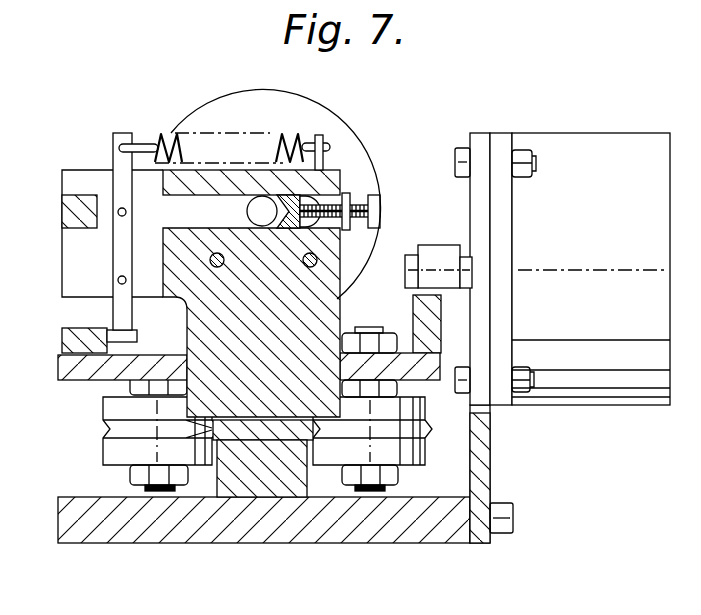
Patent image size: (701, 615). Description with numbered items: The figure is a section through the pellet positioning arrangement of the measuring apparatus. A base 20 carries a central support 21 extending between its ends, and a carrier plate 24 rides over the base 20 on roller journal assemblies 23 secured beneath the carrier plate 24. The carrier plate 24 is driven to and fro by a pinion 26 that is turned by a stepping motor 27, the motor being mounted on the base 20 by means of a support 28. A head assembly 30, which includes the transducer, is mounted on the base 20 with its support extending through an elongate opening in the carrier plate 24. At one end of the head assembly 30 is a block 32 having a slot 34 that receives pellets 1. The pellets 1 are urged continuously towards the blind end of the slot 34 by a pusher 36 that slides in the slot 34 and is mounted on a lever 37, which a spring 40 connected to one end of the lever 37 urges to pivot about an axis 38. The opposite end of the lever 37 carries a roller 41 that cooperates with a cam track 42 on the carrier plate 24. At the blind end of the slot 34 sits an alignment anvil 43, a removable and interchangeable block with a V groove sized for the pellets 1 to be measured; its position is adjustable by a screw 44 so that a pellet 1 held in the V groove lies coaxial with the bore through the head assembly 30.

The pellet 1 is at (262, 208).
The base 20 is at (390, 522).
The central support 21 is at (255, 472).
The roller journal assemblies 23 is at (103, 442).
The carrier plate 24 is at (68, 368).
The pinion 26 is at (437, 257).
The stepping motor 27 is at (545, 160).
The support 28 is at (478, 452).
The head assembly 30 is at (332, 122).
The block 32 is at (323, 183).
The slot 34 is at (193, 210).
The pusher 36 is at (105, 218).
The lever 37 is at (118, 253).
The axis 38 is at (116, 281).
The spring 40 is at (175, 133).
The roller 41 is at (120, 336).
The cam track 42 is at (60, 345).
The alignment anvil 43 is at (317, 198).
The screw 44 is at (382, 212).